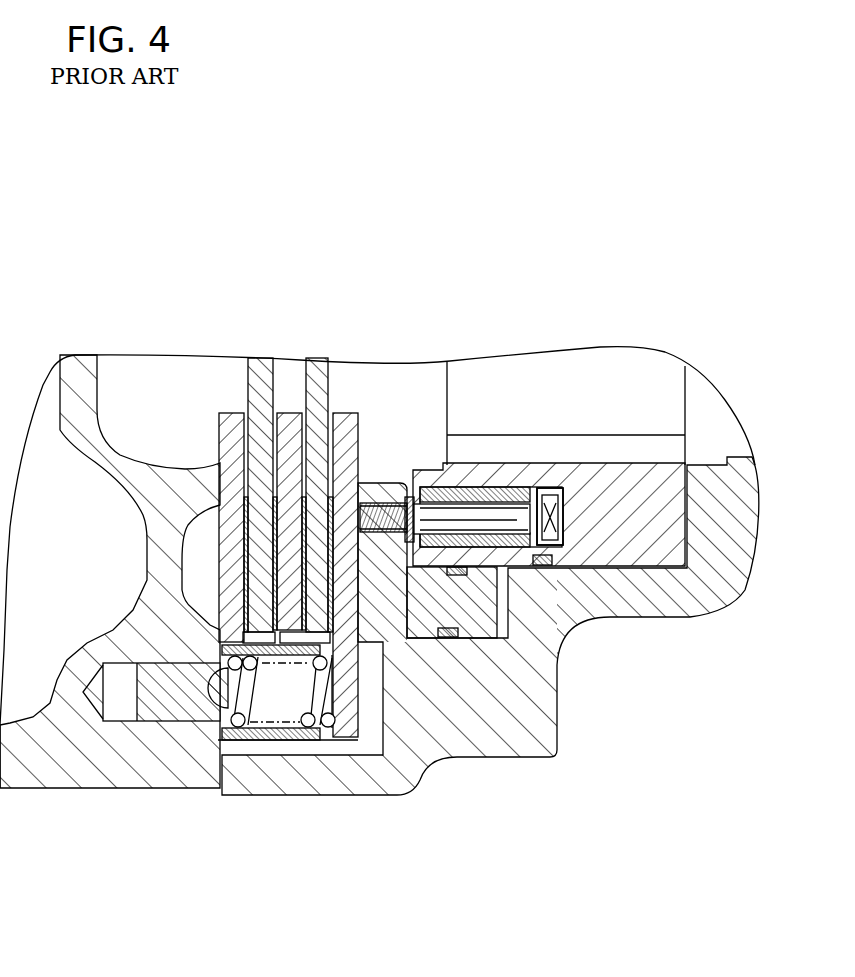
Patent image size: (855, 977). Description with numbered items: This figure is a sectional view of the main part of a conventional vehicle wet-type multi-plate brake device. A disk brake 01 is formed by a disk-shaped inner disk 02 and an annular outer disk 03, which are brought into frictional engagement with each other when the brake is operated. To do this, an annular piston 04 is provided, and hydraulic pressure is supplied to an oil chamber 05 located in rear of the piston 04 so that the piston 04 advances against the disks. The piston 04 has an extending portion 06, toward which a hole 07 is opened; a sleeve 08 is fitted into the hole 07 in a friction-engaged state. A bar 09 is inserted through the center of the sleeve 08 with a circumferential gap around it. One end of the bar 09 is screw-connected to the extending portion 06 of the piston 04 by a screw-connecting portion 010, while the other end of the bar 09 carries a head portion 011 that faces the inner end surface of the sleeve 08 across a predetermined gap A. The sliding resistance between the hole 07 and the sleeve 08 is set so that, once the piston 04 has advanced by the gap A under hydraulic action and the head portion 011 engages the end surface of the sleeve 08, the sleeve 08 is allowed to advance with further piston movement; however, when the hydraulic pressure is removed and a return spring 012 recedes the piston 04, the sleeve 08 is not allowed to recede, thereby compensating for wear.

The disk brake 01 is at (207, 440).
The inner disk 02 is at (320, 378).
The outer disk 03 is at (293, 417).
The annular piston 04 is at (557, 697).
The oil chamber 05 is at (503, 600).
The extending portion 06 is at (386, 500).
The hole 07 is at (497, 497).
The sleeve 08 is at (538, 487).
The bar 09 is at (467, 507).
The screw-connecting portion 010 is at (387, 537).
The head portion 011 is at (556, 503).
The return spring 012 is at (320, 683).
The predetermined gap A is at (545, 485).